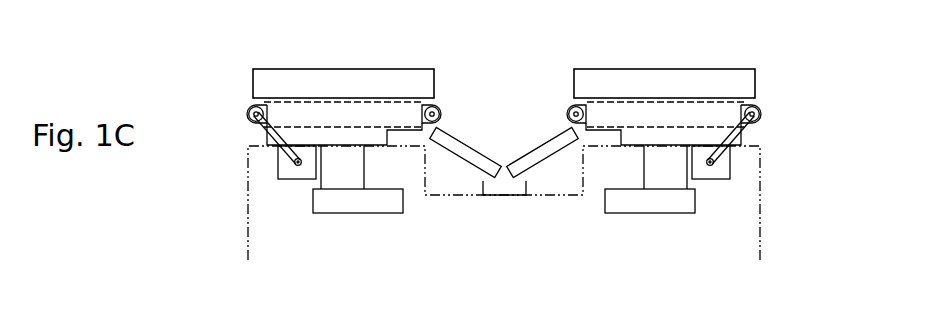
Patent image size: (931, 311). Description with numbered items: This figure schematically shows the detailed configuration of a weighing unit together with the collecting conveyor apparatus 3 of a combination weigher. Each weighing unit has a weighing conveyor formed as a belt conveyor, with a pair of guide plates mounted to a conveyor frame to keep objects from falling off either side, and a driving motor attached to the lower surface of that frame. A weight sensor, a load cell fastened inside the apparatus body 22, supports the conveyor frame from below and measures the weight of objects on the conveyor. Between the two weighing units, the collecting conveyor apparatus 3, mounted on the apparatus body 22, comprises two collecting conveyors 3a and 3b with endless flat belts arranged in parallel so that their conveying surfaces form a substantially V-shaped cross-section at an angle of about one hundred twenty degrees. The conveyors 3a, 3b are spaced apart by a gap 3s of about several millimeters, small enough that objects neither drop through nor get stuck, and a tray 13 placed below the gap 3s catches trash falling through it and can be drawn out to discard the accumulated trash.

The collecting conveyor apparatus 3 is at (504, 155).
The collecting conveyor 3a is at (535, 145).
The collecting conveyor 3b is at (473, 145).
The gap 3s is at (504, 177).
The tray 13 is at (483, 184).
The apparatus body 22 is at (761, 225).